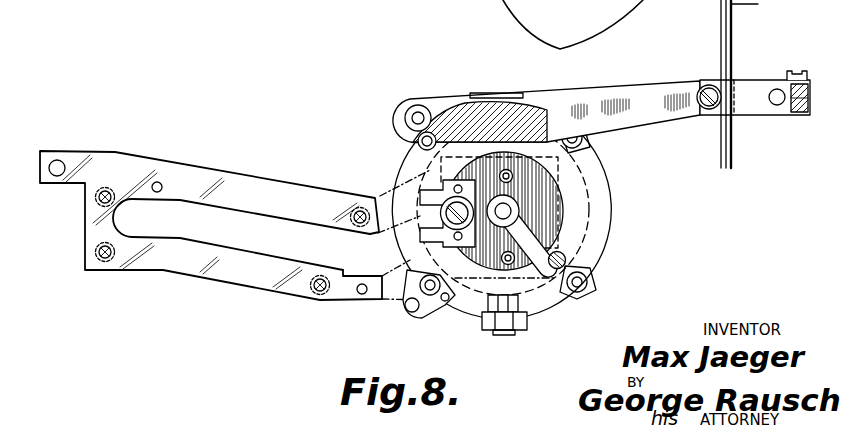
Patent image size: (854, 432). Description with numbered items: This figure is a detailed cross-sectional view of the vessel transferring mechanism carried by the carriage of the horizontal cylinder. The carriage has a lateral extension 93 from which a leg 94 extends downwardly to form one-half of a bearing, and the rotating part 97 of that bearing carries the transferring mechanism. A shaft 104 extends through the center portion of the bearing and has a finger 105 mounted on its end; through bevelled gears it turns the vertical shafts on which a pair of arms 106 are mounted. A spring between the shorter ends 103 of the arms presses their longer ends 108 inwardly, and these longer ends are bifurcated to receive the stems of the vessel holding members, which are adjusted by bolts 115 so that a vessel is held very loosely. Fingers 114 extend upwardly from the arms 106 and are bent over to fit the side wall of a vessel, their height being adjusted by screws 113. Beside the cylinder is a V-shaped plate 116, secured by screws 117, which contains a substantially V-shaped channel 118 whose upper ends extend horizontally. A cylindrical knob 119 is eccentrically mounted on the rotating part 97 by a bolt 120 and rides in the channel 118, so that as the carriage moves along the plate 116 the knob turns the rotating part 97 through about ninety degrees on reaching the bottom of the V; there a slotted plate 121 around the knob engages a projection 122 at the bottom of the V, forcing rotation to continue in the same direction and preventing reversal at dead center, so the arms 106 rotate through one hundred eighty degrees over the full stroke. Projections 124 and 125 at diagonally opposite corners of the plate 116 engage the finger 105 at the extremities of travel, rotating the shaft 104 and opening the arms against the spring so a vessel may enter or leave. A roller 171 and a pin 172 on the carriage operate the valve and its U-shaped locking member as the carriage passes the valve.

The lateral extension 93 is at (513, 98).
The leg 94 is at (596, 228).
The rotating part of the bearing 97 is at (508, 210).
The shorter ends of the arms 103 is at (412, 100).
The shaft 104 is at (540, 200).
The finger 105 is at (525, 224).
The arms 106 is at (623, 97).
The longer ends of the arms 108 is at (757, 114).
The screws 113 is at (720, 90).
The fingers 114 is at (721, 25).
The bolts 115 is at (797, 70).
The plate 116 is at (225, 182).
The screws 117 is at (103, 189).
The channel 118 is at (273, 226).
The cylindrical knob 119 is at (478, 262).
The bolt 120 is at (432, 228).
The slotted plate 121 is at (427, 188).
The projection 122 is at (362, 295).
The projection 124 is at (564, 256).
The projection 125 is at (56, 160).
The roller 171 is at (527, 323).
The pin 172 is at (410, 316).